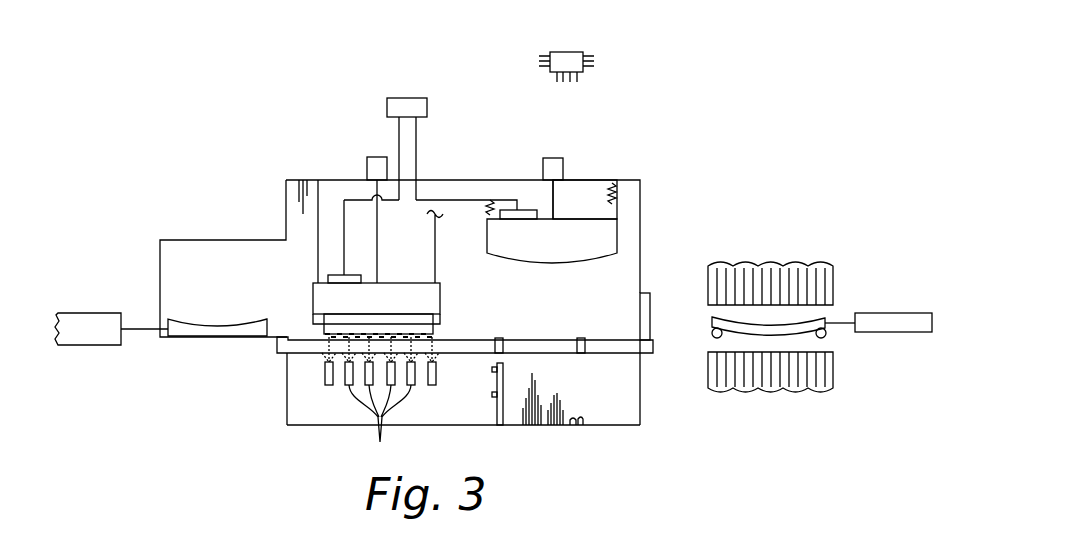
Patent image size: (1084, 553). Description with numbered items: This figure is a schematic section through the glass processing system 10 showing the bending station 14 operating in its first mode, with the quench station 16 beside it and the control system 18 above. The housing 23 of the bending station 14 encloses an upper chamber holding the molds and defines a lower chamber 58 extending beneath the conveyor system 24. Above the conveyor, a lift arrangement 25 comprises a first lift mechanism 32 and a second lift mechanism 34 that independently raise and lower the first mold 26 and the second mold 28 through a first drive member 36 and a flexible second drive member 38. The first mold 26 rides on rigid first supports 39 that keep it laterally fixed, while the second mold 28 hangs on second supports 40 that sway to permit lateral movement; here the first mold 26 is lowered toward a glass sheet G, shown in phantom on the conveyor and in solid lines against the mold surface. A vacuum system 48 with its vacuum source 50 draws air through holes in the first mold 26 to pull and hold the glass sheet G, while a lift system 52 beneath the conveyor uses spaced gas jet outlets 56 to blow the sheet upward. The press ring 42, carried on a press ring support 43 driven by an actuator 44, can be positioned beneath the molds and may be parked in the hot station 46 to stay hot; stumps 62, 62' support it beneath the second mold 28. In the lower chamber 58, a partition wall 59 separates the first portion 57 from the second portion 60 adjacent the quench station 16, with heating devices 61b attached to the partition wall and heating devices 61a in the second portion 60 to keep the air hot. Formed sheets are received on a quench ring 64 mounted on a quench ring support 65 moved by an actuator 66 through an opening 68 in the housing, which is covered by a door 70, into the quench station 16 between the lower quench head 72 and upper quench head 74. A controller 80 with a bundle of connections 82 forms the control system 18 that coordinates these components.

The glass processing system 10 is at (736, 117).
The bending station 14 is at (299, 450).
The quench station 16 is at (788, 421).
The control system 18 is at (592, 35).
The housing 23 is at (640, 197).
The conveyor system 24 is at (612, 357).
The lift arrangement 25 is at (356, 163).
The first mold 26 is at (313, 300).
The second mold 28 is at (617, 245).
The first lift mechanism 32 is at (372, 157).
The second lift mechanism 34 is at (556, 158).
The first drive member 36 is at (360, 254).
The second drive member 38 is at (553, 199).
The first supports 39 is at (318, 233).
The second supports 40 is at (490, 203).
The press ring 42 is at (188, 322).
The press ring support 43 is at (143, 330).
The actuator 44 is at (82, 346).
The hot station 46 is at (210, 357).
The vacuum system 48 is at (385, 94).
The vacuum source 50 is at (420, 106).
The lift system 52 is at (333, 389).
The gas jet outlets 56 is at (380, 426).
The first portion 57 is at (348, 418).
The lower chamber 58 is at (296, 378).
The partition wall 59 is at (505, 425).
The second portion 60 is at (612, 425).
The heating devices 61a is at (578, 421).
The heating devices 61b is at (492, 395).
The support 62 is at (571, 320).
The support 62' is at (520, 330).
The quench ring 64 is at (823, 318).
The quench ring support 65 is at (835, 324).
The actuator 66 is at (893, 313).
The opening 68 is at (640, 294).
The door 70 is at (651, 328).
The lower quench head 72 is at (833, 372).
The upper quench head 74 is at (833, 285).
The controller 80 is at (560, 52).
The connections 82 is at (595, 89).
The glass sheet G is at (333, 329).